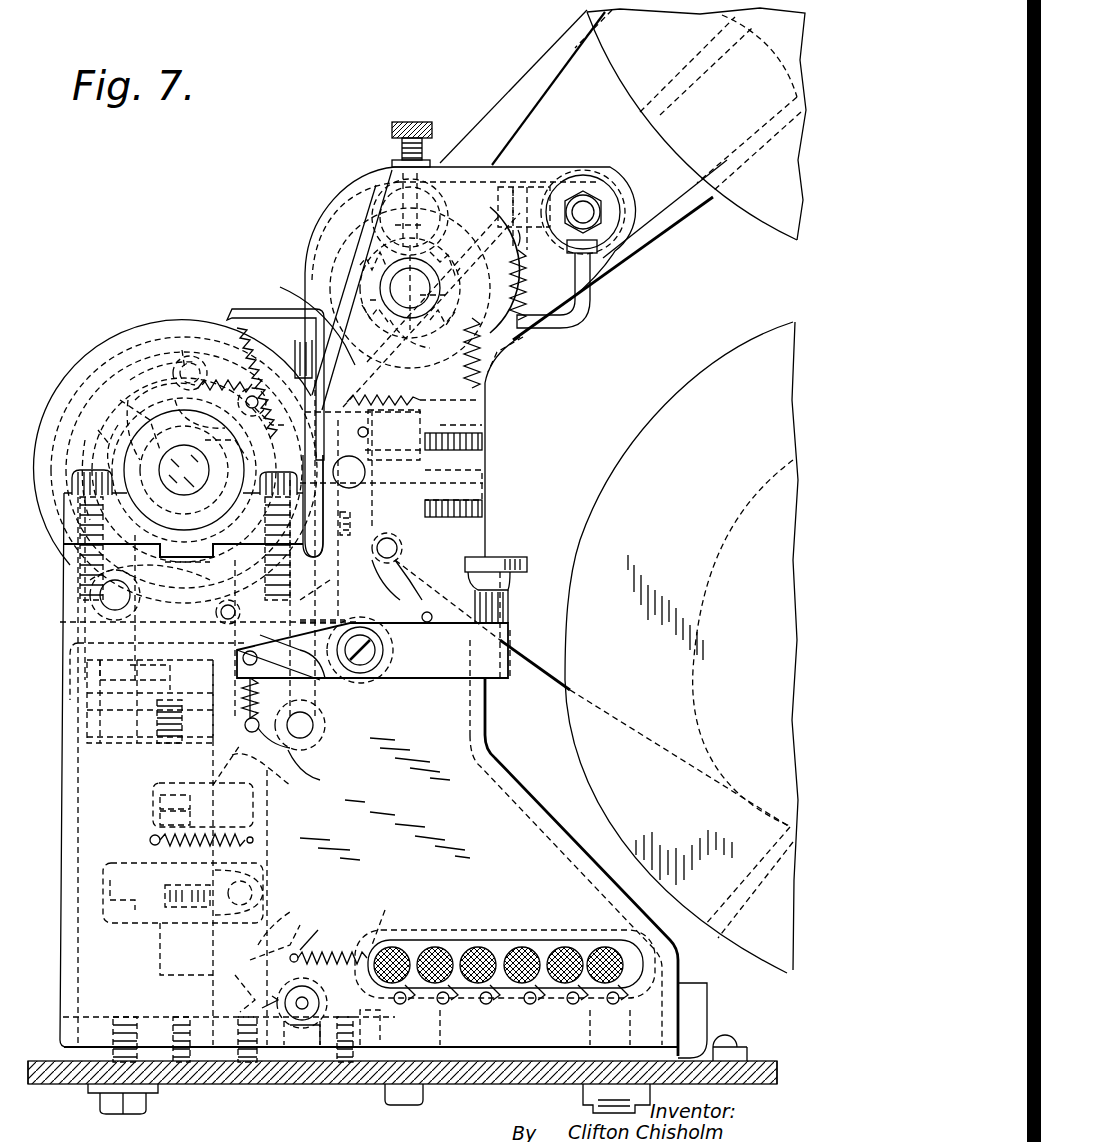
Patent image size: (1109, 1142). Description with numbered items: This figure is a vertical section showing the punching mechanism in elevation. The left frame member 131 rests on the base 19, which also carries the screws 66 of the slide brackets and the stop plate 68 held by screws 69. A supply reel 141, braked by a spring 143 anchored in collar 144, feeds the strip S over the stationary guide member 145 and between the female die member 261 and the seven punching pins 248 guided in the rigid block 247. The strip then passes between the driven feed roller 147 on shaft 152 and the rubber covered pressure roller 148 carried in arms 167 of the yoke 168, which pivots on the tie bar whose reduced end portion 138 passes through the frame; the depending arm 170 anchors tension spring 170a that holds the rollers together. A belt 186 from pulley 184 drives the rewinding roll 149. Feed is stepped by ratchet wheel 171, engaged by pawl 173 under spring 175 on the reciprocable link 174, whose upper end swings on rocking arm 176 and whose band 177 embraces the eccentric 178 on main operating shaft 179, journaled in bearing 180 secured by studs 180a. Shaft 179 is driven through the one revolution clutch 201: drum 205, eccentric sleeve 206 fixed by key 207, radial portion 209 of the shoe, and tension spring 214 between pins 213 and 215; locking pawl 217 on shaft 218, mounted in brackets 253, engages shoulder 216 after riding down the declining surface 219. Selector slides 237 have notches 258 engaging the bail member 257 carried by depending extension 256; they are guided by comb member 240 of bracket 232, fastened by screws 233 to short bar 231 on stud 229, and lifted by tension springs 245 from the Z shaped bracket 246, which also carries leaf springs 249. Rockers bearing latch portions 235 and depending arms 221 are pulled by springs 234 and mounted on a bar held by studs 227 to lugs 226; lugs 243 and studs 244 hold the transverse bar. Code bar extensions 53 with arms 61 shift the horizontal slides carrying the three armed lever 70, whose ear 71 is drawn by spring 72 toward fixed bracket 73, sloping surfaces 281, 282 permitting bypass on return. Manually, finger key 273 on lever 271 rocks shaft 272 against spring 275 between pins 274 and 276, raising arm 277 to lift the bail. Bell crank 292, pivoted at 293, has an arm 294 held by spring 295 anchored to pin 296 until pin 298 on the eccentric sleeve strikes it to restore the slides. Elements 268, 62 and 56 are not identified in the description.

The belt 186 is at (487, 85).
The strip S is at (540, 112).
The yoke 168 is at (520, 178).
The reduced end portion 138 is at (600, 198).
The supply reel 141 is at (606, 494).
The spring 143 is at (612, 212).
The pressure roller 148 is at (365, 178).
The arms 167 is at (345, 188).
The pulley 184 is at (318, 245).
The toothed ratchet wheel 171 is at (318, 255).
The arm 176 is at (312, 316).
The Z shaped bracket 246 is at (268, 308).
The tension spring 245 is at (252, 332).
The leaf springs 249 is at (298, 348).
The driven feed roller 147 is at (425, 268).
The feed roller shaft 152 is at (437, 282).
The pawl 173 is at (448, 298).
The tension spring 170a is at (540, 292).
The depending arm 170 is at (592, 304).
The spring 175 is at (503, 358).
The rewinding roll 149 is at (762, 228).
The one revolution clutch 201 is at (125, 335).
The drum 205 is at (55, 392).
The pin 213 is at (183, 352).
The radial portion 209 is at (222, 370).
The tension spring 214 is at (200, 392).
The pin 215 is at (235, 410).
The reciprocable link 174 is at (262, 392).
The arm 294 is at (262, 405).
The eccentric 178 is at (145, 386).
The circular band 177 is at (118, 400).
The declining surface 219 is at (112, 412).
The shoulder 216 is at (108, 428).
The locking pawl 217 is at (92, 450).
The key 207 is at (178, 445).
The main operating shaft 179 is at (205, 455).
The pin 298 is at (238, 444).
The bell crank 292 is at (378, 444).
The contact 268 is at (490, 440).
The pin 296 is at (490, 418).
The female die member 261 is at (487, 470).
The spring 295 is at (413, 399).
The left frame member 131 is at (64, 718).
The studs 180a is at (62, 530).
The bearing 180 is at (58, 584).
The eccentric sleeve 206 is at (193, 506).
The depending extension 256 is at (170, 566).
The bail member 257 is at (260, 570).
The notch 258 is at (228, 598).
The brackets 253 is at (135, 606).
The rotatable shaft 218 is at (80, 625).
The pivot 293 is at (403, 548).
The guide block 247 is at (348, 537).
The punching pins 248 is at (370, 575).
The stationary guide member 145 is at (412, 574).
The collar 144 is at (418, 610).
The arm 277 is at (300, 618).
The finger key 273 is at (522, 560).
The lever 271 is at (460, 685).
The rotatable shaft 272 is at (362, 680).
The pin 274 is at (300, 682).
The comb member 240 is at (248, 740).
The tension spring 275 is at (246, 735).
The pin 276 is at (290, 745).
The vertically slidable bar 237 is at (310, 770).
The latch portion 235 is at (270, 782).
The lugs 243 is at (140, 742).
The studs 244 is at (155, 725).
The short bar 231 is at (182, 783).
The bracket 232 is at (158, 802).
The fastening screws 233 is at (158, 816).
The tension springs 234 is at (195, 848).
The stud 229 is at (150, 858).
The studs 227 is at (128, 925).
The lugs 226 is at (155, 940).
The sloping surface 281 is at (275, 942).
The sloping surface 282 is at (277, 928).
The upstanding arm 71 is at (312, 928).
The spring 72 is at (325, 950).
The fixed bracket 73 is at (387, 915).
The three armed lever 70 is at (262, 1010).
The shafts 53 is at (462, 940).
The terminal 62 is at (420, 1000).
The arm 61 is at (458, 1003).
The screws 66 is at (690, 968).
The stop plate 68 is at (708, 1010).
The screws 69 is at (735, 1038).
The base 19 is at (498, 1090).
The depending arm 221 is at (470, 1087).
The bolt 56 is at (405, 1105).